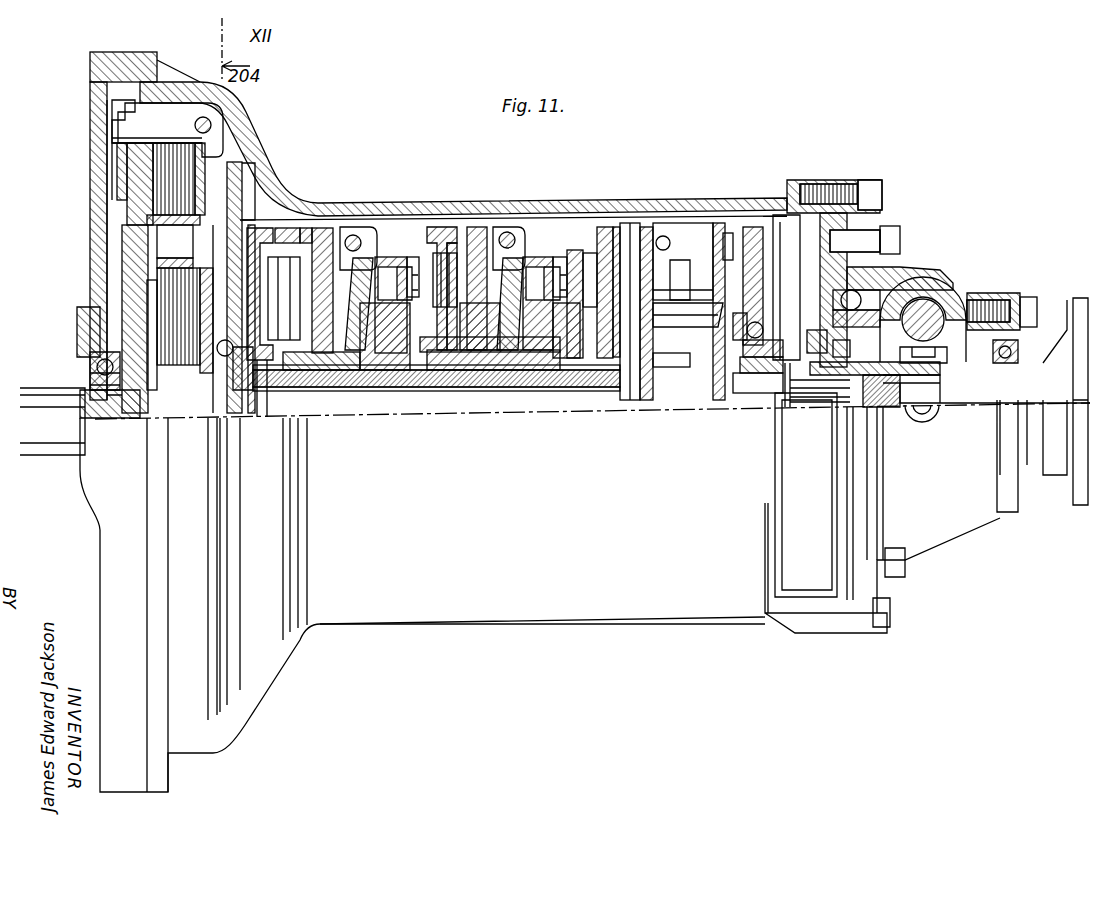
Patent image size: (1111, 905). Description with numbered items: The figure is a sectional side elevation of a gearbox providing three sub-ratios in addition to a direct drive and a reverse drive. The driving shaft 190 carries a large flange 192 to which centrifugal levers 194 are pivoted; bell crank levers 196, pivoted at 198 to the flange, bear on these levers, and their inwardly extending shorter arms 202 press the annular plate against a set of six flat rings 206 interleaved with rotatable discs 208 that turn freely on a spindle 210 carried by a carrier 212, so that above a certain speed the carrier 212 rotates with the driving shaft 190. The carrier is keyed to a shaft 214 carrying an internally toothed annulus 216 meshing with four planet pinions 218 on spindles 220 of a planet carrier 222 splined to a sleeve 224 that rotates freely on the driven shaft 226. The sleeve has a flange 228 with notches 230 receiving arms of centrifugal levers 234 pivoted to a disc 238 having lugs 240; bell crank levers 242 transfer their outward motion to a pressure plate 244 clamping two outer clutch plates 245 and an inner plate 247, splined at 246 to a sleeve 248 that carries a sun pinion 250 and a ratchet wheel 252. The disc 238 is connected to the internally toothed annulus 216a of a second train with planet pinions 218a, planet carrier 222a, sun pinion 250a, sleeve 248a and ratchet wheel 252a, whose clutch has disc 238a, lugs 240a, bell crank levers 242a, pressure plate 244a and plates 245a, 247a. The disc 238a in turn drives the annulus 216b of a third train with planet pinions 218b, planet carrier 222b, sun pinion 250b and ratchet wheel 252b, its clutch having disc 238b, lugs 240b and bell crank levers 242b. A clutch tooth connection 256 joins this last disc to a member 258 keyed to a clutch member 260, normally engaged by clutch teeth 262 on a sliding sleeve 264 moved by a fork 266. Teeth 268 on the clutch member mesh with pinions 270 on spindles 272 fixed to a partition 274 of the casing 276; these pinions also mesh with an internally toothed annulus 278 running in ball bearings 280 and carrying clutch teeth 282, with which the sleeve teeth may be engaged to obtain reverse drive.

The driving shaft 190 is at (55, 390).
The flange 192 is at (135, 240).
The centrifugal levers 194 is at (118, 150).
The bell crank levers 196 is at (155, 122).
The pivot 198 is at (203, 117).
The shorter arms 202 is at (205, 148).
The flat rings 206 is at (155, 178).
The rotatable discs 208 is at (170, 305).
The spindle 210 is at (165, 243).
The carrier 212 is at (168, 385).
The shaft 214 is at (150, 422).
The internally toothed annulus 216 is at (305, 200).
The planet pinions 218 is at (262, 262).
The spindles 220 is at (318, 390).
The planet carrier 222 is at (265, 385).
The sleeve 224 is at (405, 390).
The driven shaft 226 is at (345, 391).
The flange 228 is at (405, 391).
The notches 230 is at (450, 391).
The centrifugal levers 234 is at (410, 255).
The disc 238 is at (368, 258).
The lugs 240 is at (392, 268).
The bell crank levers 242 is at (380, 262).
The pressure plate 244 is at (382, 390).
The outer clutch plates 245 is at (320, 240).
The splines 246 is at (423, 391).
The inner clutch plate 247 is at (353, 236).
The sleeve 248 is at (365, 390).
The sun pinion 250 is at (285, 390).
The ratchet wheel 252 is at (320, 228).
The internally toothed annulus 216a is at (455, 226).
The planet pinions 218a is at (445, 240).
The planet carrier 222a is at (462, 391).
The disc 238a is at (520, 258).
The lugs 240a is at (540, 268).
The bell crank levers 242a is at (528, 262).
The pressure plate 244a is at (530, 240).
The outer clutch plates 245a is at (575, 391).
The inner clutch plate 247a is at (512, 236).
The sleeve 248a is at (490, 391).
The sun pinion 250a is at (518, 391).
The ratchet wheel 252a is at (476, 228).
The internally toothed annulus 216b is at (618, 225).
The planet pinions 218b is at (628, 232).
The planet carrier 222b is at (590, 391).
The disc 238b is at (728, 225).
The lugs 240b is at (680, 240).
The bell crank levers 242b is at (730, 265).
The sun pinion 250b is at (640, 395).
The ratchet wheel 252b is at (650, 225).
The clutch tooth connection 256 is at (745, 395).
The member 258 is at (760, 395).
The clutch member 260 is at (897, 232).
The clutch teeth 262 is at (823, 350).
The sliding sleeve 264 is at (850, 397).
The fork 266 is at (985, 300).
The teeth 268 is at (880, 235).
The pinions 270 is at (835, 195).
The spindles 272 is at (752, 270).
The partition 274 is at (745, 243).
The casing 276 is at (460, 604).
The internally toothed annulus 278 is at (790, 265).
The ball bearings 280 is at (880, 275).
The clutch teeth 282 is at (935, 285).